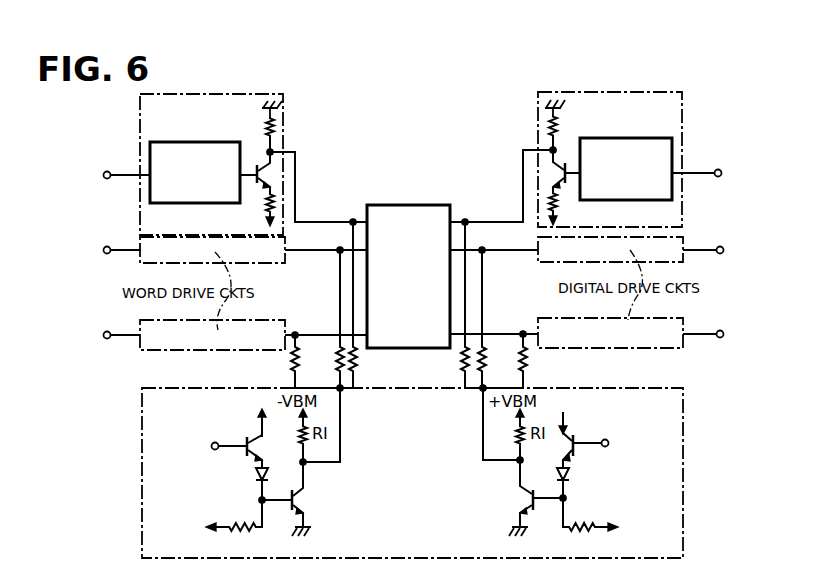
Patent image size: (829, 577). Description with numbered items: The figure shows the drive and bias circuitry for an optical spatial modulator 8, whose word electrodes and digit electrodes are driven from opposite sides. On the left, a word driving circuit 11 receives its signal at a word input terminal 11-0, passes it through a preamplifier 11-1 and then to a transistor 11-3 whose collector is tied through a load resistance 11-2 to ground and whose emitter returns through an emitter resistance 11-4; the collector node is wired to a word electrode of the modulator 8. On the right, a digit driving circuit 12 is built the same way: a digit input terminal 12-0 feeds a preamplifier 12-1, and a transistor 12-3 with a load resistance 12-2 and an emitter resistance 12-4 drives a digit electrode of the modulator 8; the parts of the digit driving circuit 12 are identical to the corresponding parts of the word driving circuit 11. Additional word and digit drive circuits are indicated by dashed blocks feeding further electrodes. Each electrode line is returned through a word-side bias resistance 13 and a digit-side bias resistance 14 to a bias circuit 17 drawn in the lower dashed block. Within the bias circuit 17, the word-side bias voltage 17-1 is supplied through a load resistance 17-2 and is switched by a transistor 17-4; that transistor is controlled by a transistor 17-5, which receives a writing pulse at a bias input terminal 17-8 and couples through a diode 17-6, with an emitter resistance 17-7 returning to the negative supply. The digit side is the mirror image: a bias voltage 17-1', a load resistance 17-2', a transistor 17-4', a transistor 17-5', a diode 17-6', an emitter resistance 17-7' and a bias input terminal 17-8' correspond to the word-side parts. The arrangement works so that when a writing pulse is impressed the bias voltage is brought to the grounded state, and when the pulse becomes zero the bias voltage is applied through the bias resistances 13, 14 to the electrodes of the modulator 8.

The optical spatial modulator 8 is at (412, 205).
The word driving circuit 11 is at (163, 94).
The word input terminal 11-0 is at (104, 175).
The preamplifier 11-1 is at (168, 142).
The load resistance 11-2 is at (275, 128).
The transistor 11-3 is at (263, 176).
The emitter resistance 11-4 is at (273, 205).
The digit driving circuit 12 is at (548, 92).
The digit input terminal 12-0 is at (716, 174).
The preamplifier 12-1 is at (662, 138).
The load resistance 12-2 is at (557, 128).
The transistor 12-3 is at (557, 172).
The emitter resistance 12-4 is at (553, 205).
The bias resistance 13 is at (353, 343).
The bias resistance 14 is at (457, 337).
The bias circuit 17 is at (683, 428).
The bias voltage 17-1 is at (364, 406).
The load resistance 17-2 is at (345, 443).
The transistor 17-4 is at (321, 499).
The transistor 17-5 is at (233, 429).
The diode 17-6 is at (226, 484).
The emitter resistance 17-7 is at (211, 537).
The bias input terminal 17-8 is at (189, 446).
The bias voltage 17-1' is at (450, 406).
The load resistance 17-2' is at (470, 442).
The transistor 17-4' is at (506, 498).
The transistor 17-5' is at (584, 428).
The diode 17-6' is at (591, 483).
The emitter resistance 17-7' is at (609, 537).
The bias input terminal 17-8' is at (628, 443).